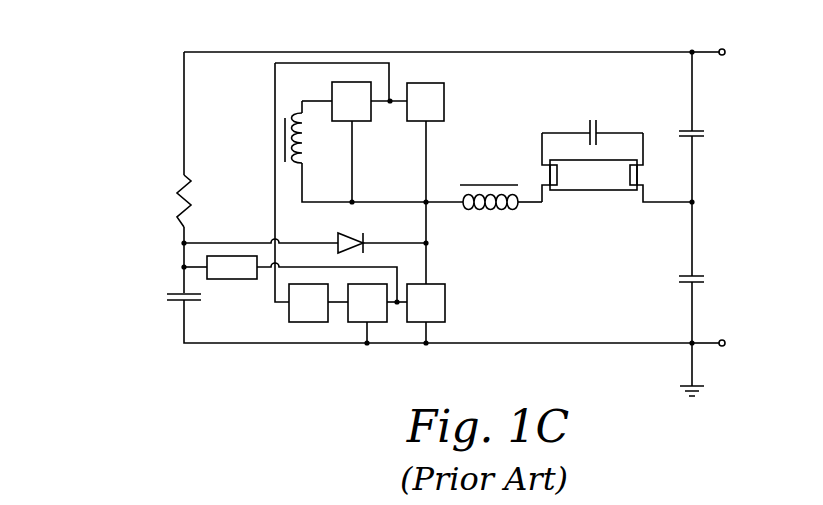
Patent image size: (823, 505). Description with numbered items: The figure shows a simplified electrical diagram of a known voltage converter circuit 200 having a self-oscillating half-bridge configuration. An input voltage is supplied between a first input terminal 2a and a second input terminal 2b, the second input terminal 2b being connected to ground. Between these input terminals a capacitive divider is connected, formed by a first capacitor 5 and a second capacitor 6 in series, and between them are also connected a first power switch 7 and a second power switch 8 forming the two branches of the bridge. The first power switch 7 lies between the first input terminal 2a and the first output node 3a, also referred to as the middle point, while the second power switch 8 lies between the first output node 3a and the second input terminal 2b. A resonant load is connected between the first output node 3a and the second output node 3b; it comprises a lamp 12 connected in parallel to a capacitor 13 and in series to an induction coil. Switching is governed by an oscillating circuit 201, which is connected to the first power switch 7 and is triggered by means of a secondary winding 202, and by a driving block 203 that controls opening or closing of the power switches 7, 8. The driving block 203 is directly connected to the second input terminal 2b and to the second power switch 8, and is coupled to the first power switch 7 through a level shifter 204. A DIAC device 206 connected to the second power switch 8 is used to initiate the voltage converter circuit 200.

The voltage converter circuit 200 is at (138, 212).
The oscillating circuit 201 is at (360, 110).
The secondary winding 202 is at (298, 111).
The driving block 203 is at (358, 314).
The level shifter 204 is at (311, 314).
The DIAC device 206 is at (232, 270).
The first power switch 7 is at (427, 104).
The second power switch 8 is at (428, 308).
The capacitor 13 is at (588, 123).
The lamp 12 is at (590, 178).
The first capacitor 5 is at (700, 128).
The second capacitor 6 is at (699, 272).
The first output node 3a is at (429, 204).
The second output node 3b is at (695, 202).
The first input terminal 2a is at (722, 48).
The second input terminal 2b is at (725, 344).